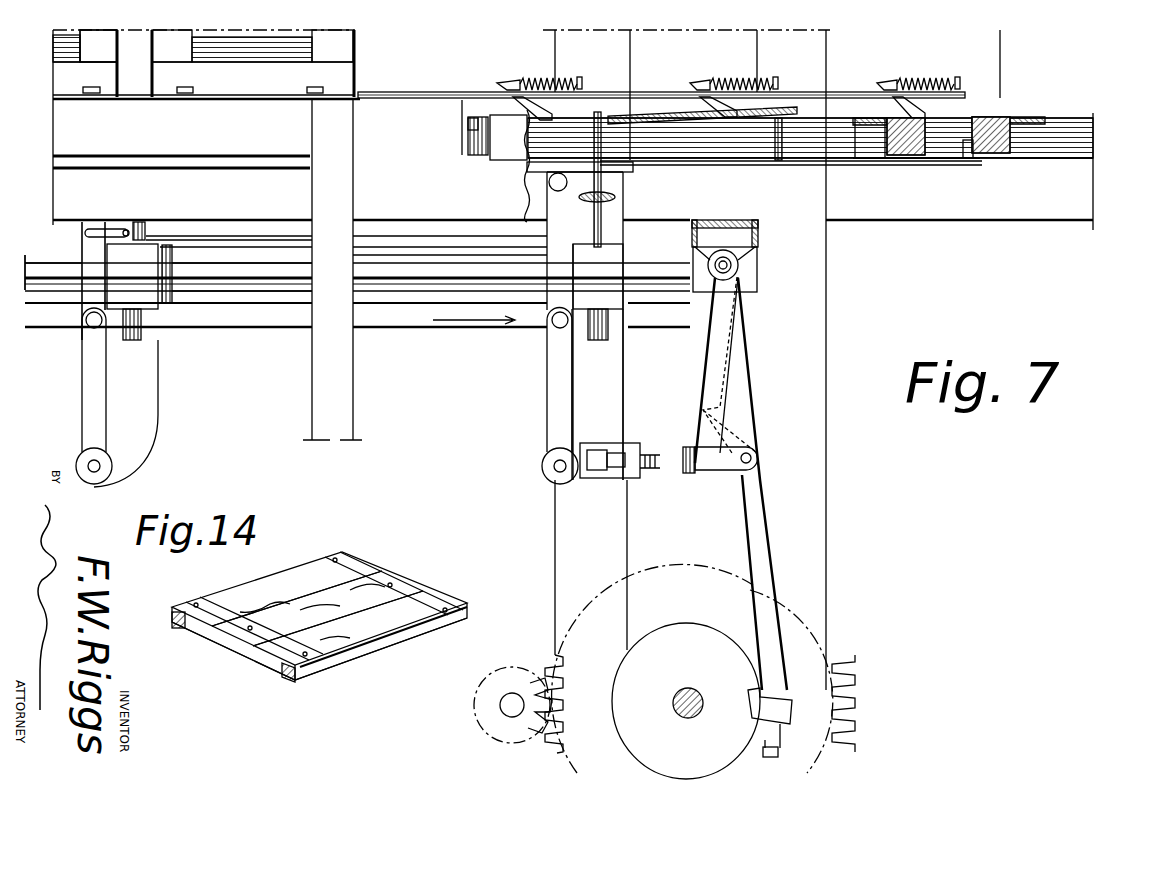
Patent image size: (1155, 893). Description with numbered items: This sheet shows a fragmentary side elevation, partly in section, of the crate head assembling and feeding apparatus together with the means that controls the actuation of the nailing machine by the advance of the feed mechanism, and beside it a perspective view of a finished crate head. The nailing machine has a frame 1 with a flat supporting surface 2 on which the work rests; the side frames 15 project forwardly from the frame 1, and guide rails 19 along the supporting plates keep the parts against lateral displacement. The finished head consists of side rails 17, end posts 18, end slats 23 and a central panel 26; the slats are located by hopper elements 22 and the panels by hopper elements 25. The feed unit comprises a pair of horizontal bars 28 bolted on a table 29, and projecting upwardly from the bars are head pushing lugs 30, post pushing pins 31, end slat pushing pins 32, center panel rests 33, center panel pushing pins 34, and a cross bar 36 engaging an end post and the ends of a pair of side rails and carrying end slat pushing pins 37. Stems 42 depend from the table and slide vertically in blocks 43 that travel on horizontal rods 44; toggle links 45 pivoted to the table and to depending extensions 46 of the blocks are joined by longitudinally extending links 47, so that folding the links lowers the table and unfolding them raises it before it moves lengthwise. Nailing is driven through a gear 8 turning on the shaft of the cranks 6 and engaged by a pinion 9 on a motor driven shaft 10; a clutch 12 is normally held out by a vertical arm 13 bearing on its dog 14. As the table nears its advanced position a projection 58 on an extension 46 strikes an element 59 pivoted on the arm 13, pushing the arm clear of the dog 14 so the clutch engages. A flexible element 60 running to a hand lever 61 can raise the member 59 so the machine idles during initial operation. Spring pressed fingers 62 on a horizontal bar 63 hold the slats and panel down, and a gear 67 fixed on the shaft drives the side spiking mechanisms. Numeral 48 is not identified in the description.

In FIG. 7, the frame 1 is at (893, 223).
In FIG. 7, the flat supporting surface 2 is at (1040, 160).
In FIG. 7, the crank 6 is at (688, 710).
In FIG. 7, the gear 8 is at (545, 740).
In FIG. 7, the pinion 9 is at (488, 725).
In FIG. 7, the shaft 10 is at (497, 710).
In FIG. 7, the clutch 12 is at (652, 655).
In FIG. 7, the vertical arm 13 is at (770, 540).
In FIG. 7, the dog 14 is at (780, 705).
In FIG. 7, the side frames 15 is at (205, 185).
In FIG. 7, the side rails 17 is at (1070, 135).
In FIG. 14, the side rails 17 is at (173, 618).
In FIG. 7, the end posts 18 is at (1000, 135).
In FIG. 14, the end posts 18 is at (250, 660).
In FIG. 7, the guide rails 19 is at (365, 98).
In FIG. 7, the hopper elements 22 is at (100, 47).
In FIG. 7, the end slats 23 is at (68, 52).
In FIG. 14, the end slats 23 is at (385, 578).
In FIG. 7, the hopper elements 25 is at (330, 48).
In FIG. 7, the central panels 26 is at (282, 52).
In FIG. 14, the central panels 26 is at (278, 588).
In FIG. 7, the horizontal bars 28 is at (730, 165).
In FIG. 7, the table 29 is at (530, 168).
In FIG. 7, the head pushing lugs 30 is at (965, 158).
In FIG. 7, the post pushing pins 31 is at (880, 163).
In FIG. 7, the end slat pushing pins 32 is at (858, 150).
In FIG. 7, the center panel rests 33 is at (780, 158).
In FIG. 7, the center panel pushing pins 34 is at (603, 140).
In FIG. 7, the cross bar 36 is at (475, 145).
In FIG. 7, the end slat pushing pins 37 is at (465, 127).
In FIG. 7, the stems 42 is at (143, 335).
In FIG. 7, the blocks 43 is at (138, 290).
In FIG. 7, the horizontal rods 44 is at (398, 275).
In FIG. 7, the toggle links 45 is at (90, 420).
In FIG. 7, the depending extensions 46 is at (138, 410).
In FIG. 7, the longitudinally extending links 47 is at (257, 322).
In FIG. 7, the rail end 48 is at (60, 325).
In FIG. 7, the projection 58 is at (635, 472).
In FIG. 7, the element 59 is at (712, 462).
In FIG. 7, the flexible element 60 is at (383, 230).
In FIG. 7, the hand lever 61 is at (105, 232).
In FIG. 7, the spring pressed fingers 62 is at (527, 108).
In FIG. 7, the horizontal bar 63 is at (635, 92).
In FIG. 7, the gear 67 is at (835, 665).